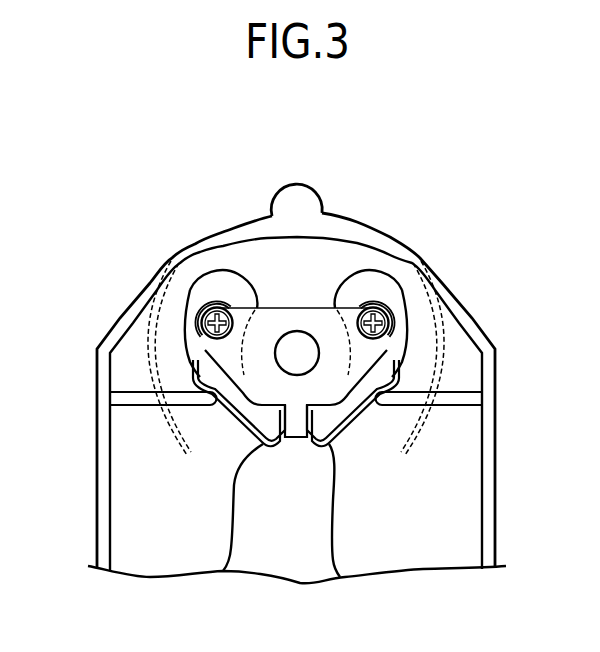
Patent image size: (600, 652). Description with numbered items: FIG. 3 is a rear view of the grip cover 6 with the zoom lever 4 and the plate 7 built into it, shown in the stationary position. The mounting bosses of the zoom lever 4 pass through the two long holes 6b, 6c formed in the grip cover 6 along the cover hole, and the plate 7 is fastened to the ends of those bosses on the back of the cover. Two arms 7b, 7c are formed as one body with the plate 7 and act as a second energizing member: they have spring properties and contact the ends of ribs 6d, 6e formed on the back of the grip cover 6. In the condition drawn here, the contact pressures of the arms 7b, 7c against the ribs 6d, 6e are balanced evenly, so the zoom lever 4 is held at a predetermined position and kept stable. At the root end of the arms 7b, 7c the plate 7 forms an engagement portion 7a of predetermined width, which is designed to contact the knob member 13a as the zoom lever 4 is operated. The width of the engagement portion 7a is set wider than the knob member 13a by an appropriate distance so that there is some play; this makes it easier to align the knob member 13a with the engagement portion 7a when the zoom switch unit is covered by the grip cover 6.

The zoom lever 4 is at (290, 195).
The grip cover 6 is at (471, 313).
The long hole 6b is at (229, 284).
The long hole 6c is at (373, 289).
The rib 6d is at (205, 398).
The rib 6e is at (387, 402).
The plate 7 is at (306, 316).
The engagement portion 7a is at (340, 577).
The arm 7b is at (190, 378).
The arm 7c is at (400, 381).
The knob member 13a is at (223, 571).